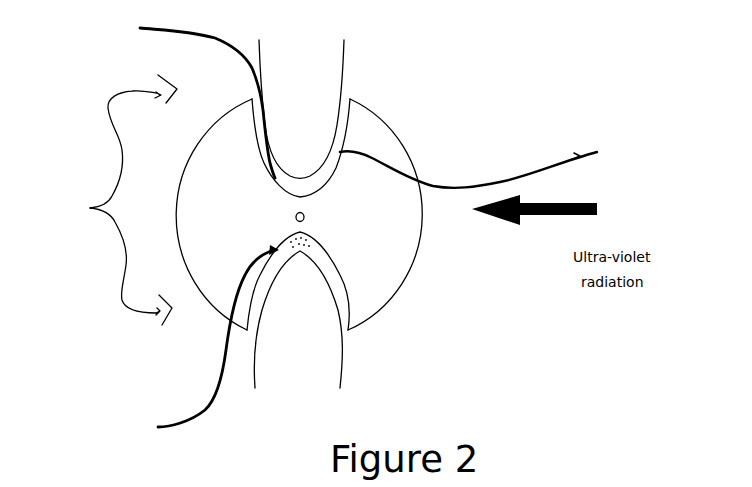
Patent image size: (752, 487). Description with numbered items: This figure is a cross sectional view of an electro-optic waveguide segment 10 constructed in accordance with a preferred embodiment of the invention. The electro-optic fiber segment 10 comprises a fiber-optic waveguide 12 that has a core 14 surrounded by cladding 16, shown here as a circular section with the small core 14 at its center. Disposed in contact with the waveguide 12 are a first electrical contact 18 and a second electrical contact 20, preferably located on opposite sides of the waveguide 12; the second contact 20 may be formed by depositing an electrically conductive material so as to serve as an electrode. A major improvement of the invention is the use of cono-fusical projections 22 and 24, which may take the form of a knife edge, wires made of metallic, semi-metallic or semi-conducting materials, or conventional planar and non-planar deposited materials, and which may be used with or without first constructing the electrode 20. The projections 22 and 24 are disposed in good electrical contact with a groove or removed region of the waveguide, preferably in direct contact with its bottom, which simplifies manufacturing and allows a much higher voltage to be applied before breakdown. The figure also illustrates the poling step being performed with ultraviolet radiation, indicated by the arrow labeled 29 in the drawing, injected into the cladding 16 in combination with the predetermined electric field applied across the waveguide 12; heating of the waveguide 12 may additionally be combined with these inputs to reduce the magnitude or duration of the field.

The electro-optic waveguide segment 10 is at (447, 138).
The fiber-optic waveguide 12 is at (107, 200).
The core 14 is at (306, 215).
The cladding 16 is at (362, 315).
The first electrical contact 18 is at (201, 337).
The second electrical contact 20 is at (225, 109).
The cono-fusical projection 22 is at (277, 373).
The cono-fusical projection 24 is at (332, 50).
The ultraviolet radiation path 29 is at (493, 169).